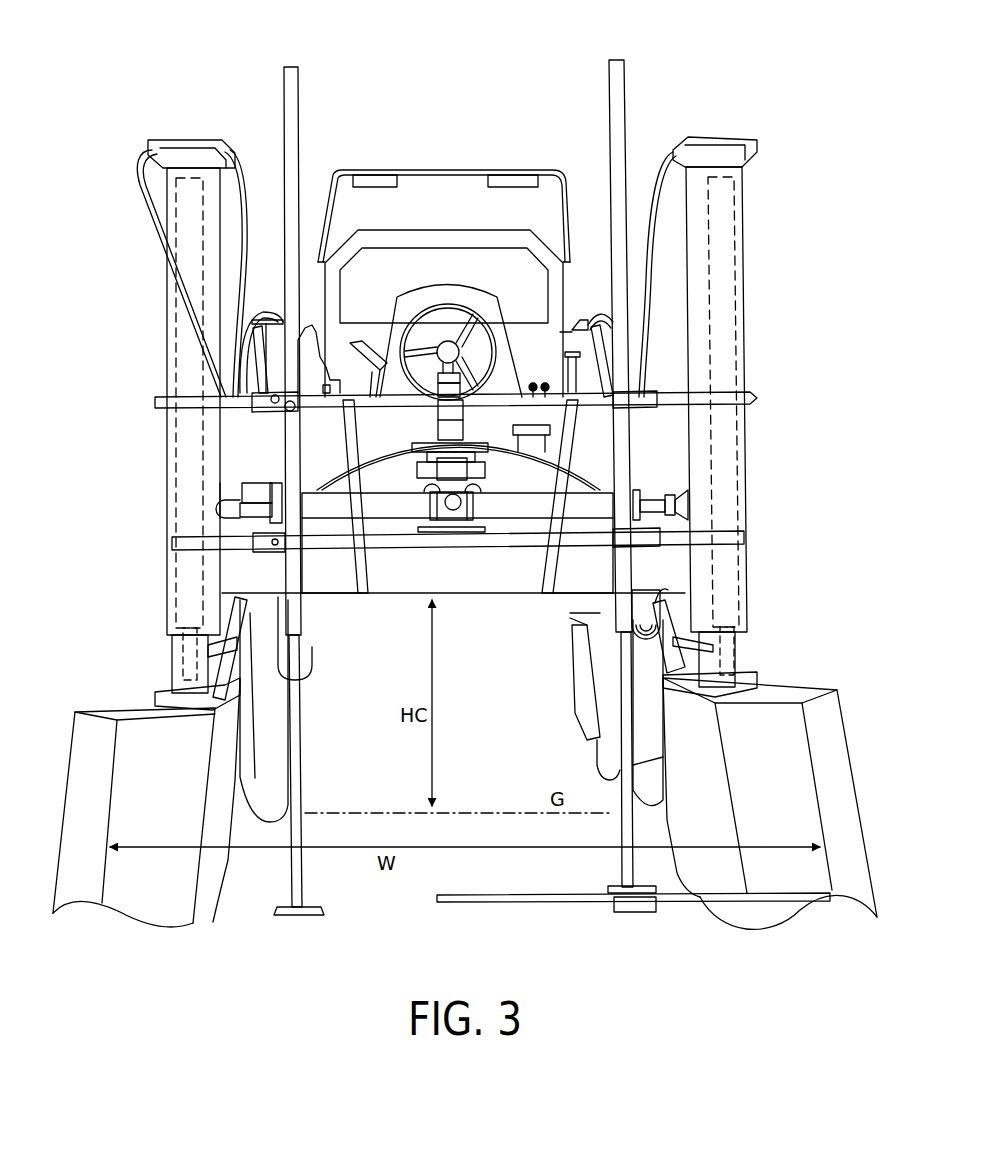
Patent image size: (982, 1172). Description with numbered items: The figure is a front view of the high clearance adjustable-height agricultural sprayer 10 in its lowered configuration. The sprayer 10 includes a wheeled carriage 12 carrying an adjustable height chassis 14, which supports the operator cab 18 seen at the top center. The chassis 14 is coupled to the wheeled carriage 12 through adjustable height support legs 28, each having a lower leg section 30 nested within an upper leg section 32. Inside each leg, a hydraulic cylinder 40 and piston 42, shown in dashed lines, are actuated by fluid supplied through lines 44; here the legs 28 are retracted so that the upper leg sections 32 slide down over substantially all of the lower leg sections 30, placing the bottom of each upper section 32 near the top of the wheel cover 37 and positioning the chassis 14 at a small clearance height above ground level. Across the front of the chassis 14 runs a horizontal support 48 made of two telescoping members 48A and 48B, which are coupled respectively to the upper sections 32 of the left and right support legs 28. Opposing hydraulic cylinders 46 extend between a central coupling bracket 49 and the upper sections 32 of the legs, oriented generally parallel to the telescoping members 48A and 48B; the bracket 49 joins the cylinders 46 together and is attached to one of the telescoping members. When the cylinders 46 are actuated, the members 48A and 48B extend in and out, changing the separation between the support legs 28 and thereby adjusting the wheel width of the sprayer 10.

The agricultural sprayer 10 is at (215, 50).
The wheeled carriage 12 is at (837, 650).
The chassis 14 is at (135, 372).
The operator cab 18 is at (417, 170).
The support leg 28 is at (182, 125).
The lower leg section 30 is at (175, 672).
The upper leg section 32 is at (165, 292).
The wheel cover 37 is at (83, 737).
The hydraulic cylinder 40 is at (175, 460).
The piston 42 is at (175, 648).
The line 44 is at (146, 178).
The hydraulic cylinder 46 is at (500, 505).
The horizontal support 48 is at (490, 580).
The telescoping member 48A is at (590, 573).
The telescoping member 48B is at (257, 573).
The coupling bracket 49 is at (455, 505).